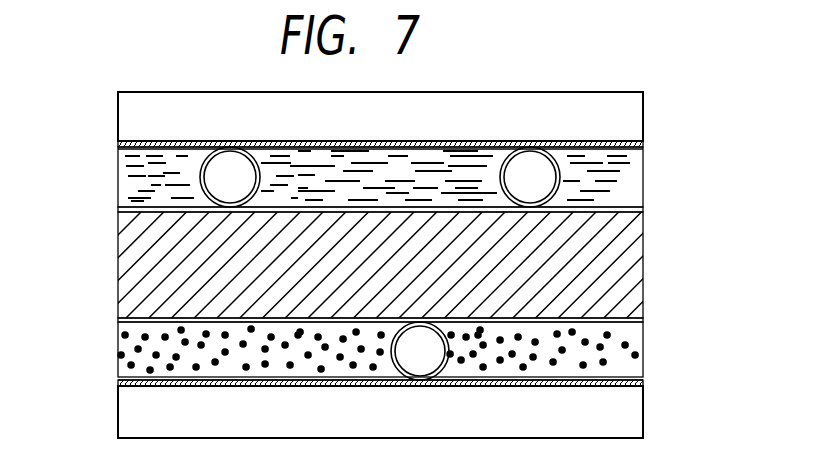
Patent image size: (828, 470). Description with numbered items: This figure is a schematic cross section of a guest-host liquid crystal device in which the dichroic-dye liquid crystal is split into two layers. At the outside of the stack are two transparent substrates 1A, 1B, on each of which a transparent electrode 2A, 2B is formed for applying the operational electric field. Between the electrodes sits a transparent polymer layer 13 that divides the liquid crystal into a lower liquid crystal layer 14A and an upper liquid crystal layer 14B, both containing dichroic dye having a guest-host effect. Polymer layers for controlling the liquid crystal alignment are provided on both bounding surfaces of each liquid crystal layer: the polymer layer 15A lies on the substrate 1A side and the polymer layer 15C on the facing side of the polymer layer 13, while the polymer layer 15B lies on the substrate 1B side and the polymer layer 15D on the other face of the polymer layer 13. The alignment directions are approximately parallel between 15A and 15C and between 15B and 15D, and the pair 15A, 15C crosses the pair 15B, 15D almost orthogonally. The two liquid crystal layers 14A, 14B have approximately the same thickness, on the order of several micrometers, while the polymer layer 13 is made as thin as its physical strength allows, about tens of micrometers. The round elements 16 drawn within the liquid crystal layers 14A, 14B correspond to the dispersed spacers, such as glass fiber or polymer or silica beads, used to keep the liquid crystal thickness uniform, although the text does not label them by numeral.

The transparent substrate 1A is at (134, 415).
The transparent substrate 1B is at (131, 110).
The transparent electrode 2A is at (122, 388).
The transparent electrode 2B is at (118, 143).
The transparent polymer layer 13 is at (127, 263).
The liquid crystal layer 14A is at (613, 355).
The liquid crystal layer 14B is at (630, 167).
The polymer layer for controlling liquid crystal alignment 15A is at (118, 377).
The polymer layer for controlling liquid crystal alignment 15B is at (121, 149).
The polymer layer for controlling liquid crystal alignment 15C is at (118, 322).
The polymer layer for controlling liquid crystal alignment 15D is at (118, 211).
The tubular channels 16 is at (673, 232).